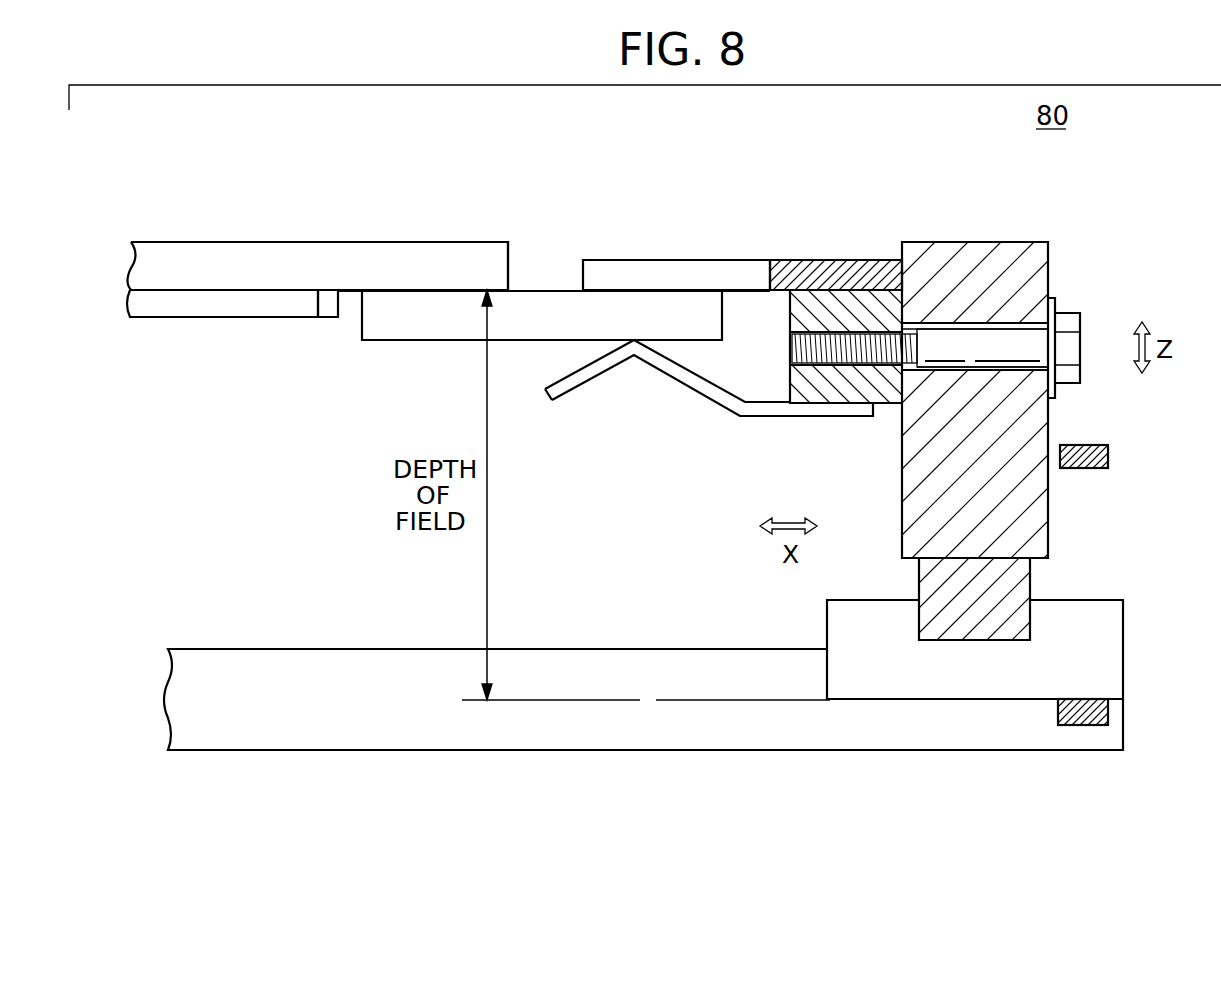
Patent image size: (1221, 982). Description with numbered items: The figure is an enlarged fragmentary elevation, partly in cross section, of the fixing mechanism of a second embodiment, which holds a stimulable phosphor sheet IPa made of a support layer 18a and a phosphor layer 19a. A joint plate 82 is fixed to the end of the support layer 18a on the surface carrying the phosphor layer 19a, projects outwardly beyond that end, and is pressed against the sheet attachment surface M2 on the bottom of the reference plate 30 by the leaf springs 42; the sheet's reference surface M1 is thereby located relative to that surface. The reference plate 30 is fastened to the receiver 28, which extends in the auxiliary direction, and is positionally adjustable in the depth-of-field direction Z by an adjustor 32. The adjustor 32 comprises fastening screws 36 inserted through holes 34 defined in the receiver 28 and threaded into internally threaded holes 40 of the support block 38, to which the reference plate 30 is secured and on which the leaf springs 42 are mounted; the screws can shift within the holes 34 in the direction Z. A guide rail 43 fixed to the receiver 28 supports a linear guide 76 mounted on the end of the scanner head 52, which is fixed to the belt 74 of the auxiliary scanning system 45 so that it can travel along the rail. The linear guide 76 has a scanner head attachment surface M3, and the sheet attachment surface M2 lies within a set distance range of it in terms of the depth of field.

The stimulable phosphor sheet IPa is at (226, 241).
The support layer 18a is at (262, 252).
The phosphor layer 19a is at (240, 305).
The reference surface M1 is at (318, 303).
The joint plate 82 is at (388, 327).
The sheet attachment surface M2 is at (742, 300).
The reference plate 30 is at (812, 276).
The receiver 28 is at (929, 241).
The hole 34 is at (1000, 322).
The adjustor 32 is at (1078, 297).
The fastening screw 36 is at (1068, 350).
The support block 38 is at (812, 390).
The internally threaded hole 40 is at (856, 356).
The leaf spring 42 is at (686, 387).
The belt 74 is at (1108, 458).
The guide rail 43 is at (1010, 594).
The linear guide 76 is at (1072, 656).
The auxiliary scanning system 45 is at (1153, 703).
The scanner head 52 is at (508, 752).
The scanner head attachment surface M3 is at (891, 702).